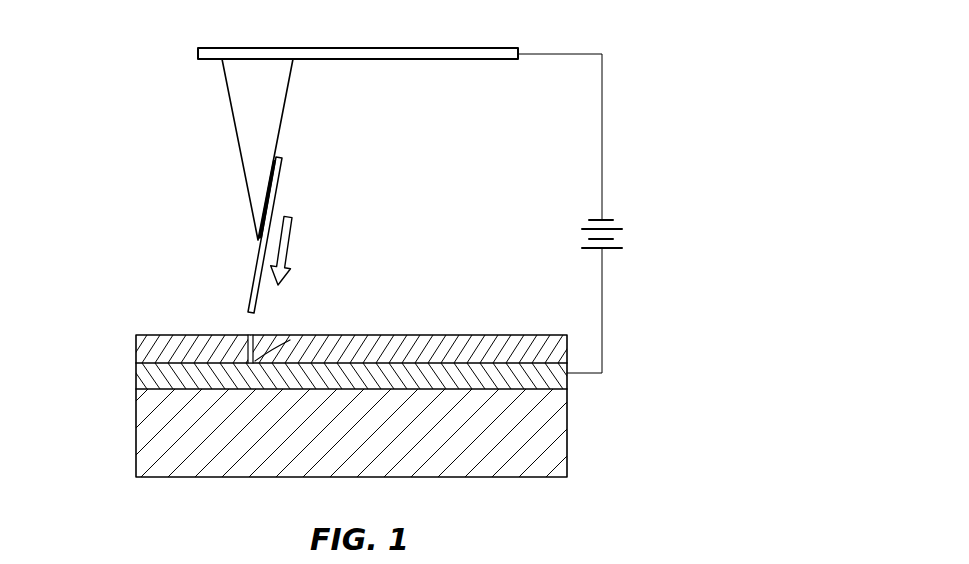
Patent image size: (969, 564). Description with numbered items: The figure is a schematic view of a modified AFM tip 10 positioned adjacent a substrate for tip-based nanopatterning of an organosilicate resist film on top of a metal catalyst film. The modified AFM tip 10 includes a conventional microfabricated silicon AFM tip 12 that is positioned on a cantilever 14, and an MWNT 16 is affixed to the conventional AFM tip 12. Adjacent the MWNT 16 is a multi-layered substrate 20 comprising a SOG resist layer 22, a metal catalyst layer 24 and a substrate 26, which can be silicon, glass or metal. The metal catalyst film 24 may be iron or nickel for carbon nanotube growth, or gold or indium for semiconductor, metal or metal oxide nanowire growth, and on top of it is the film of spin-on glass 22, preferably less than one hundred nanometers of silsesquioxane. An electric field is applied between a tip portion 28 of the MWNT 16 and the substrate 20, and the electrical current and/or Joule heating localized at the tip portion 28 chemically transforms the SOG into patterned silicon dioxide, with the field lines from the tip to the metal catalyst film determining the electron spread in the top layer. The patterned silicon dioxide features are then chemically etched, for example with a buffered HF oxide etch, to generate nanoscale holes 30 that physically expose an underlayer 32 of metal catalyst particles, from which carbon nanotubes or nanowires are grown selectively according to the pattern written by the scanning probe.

The modified AFM tip 10 is at (98, 116).
The Si AFM tip 12 is at (273, 97).
The cantilever 14 is at (448, 59).
The MWNT 16 is at (277, 182).
The multi-layered substrate 20 is at (447, 311).
The SOG resist layer 22 is at (136, 349).
The metal catalyst layer 24 is at (136, 377).
The substrate 26 is at (136, 437).
The tip portion 28 is at (240, 298).
The nanoscale holes 30 is at (263, 352).
The underlayer 32 is at (290, 340).